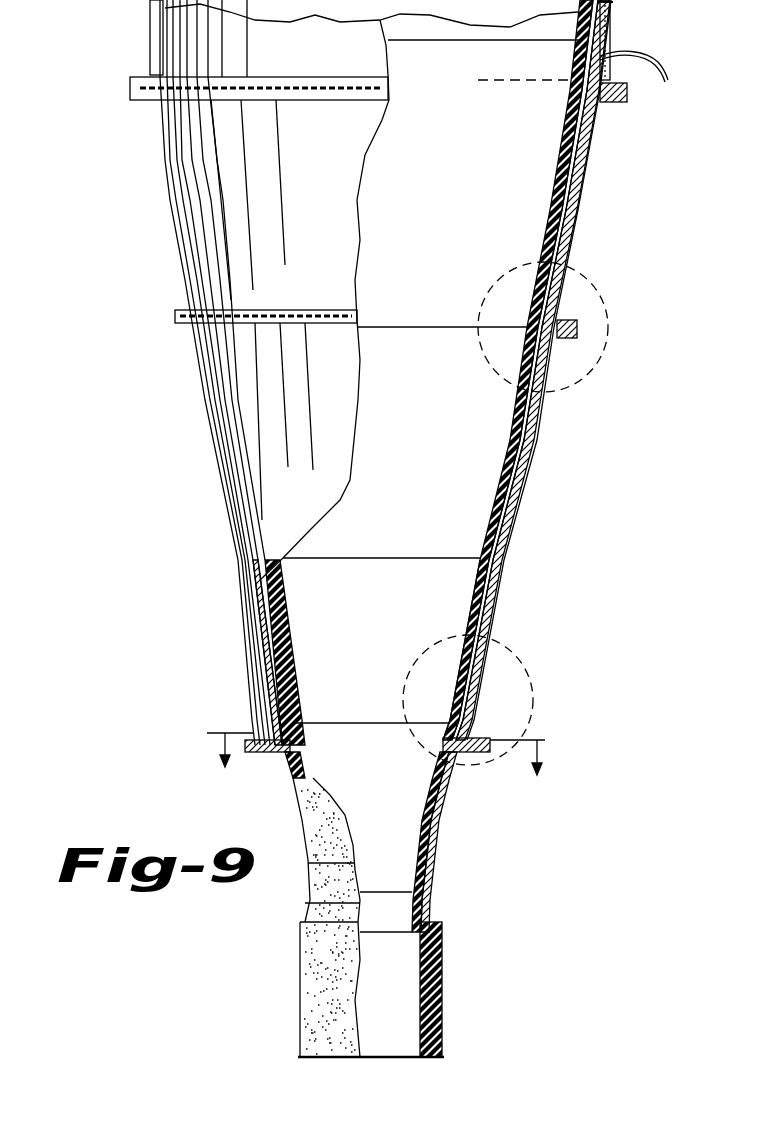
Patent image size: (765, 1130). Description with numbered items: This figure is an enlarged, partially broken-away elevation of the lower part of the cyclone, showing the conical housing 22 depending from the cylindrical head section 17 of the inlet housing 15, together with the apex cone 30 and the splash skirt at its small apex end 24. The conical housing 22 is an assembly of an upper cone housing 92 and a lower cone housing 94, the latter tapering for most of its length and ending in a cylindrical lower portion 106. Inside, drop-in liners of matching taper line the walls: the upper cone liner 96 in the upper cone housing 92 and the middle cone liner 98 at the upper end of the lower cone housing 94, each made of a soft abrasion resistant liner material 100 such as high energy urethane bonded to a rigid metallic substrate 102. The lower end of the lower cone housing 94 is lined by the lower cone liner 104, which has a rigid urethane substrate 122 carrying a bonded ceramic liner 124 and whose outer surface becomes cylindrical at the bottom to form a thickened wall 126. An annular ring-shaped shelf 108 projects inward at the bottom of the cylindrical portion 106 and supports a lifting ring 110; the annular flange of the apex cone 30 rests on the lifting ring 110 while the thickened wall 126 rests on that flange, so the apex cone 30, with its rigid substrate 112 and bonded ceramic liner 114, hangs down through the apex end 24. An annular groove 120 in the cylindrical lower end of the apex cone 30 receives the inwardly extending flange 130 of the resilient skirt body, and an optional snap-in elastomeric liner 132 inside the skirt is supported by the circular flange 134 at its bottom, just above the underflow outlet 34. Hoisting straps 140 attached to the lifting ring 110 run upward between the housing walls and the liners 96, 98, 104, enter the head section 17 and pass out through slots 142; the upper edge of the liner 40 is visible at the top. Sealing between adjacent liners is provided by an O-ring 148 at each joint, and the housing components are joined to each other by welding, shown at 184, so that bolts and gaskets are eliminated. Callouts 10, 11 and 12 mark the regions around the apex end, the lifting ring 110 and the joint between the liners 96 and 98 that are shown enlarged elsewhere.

The detail view circle 10 is at (475, 770).
The section line 11 is at (370, 769).
The detail view circle 12 is at (588, 380).
The inlet housing 15 is at (352, 58).
The cylindrical head section 17 is at (130, 88).
The conical housing 22 is at (128, 205).
The apex end 24 is at (500, 722).
The apex cone 30 is at (294, 812).
The underflow outlet 34 is at (305, 1055).
The liner 40 is at (612, 8).
The upper cone housing 92 is at (210, 250).
The lower cone housing 94 is at (245, 432).
The upper cone liner 96 is at (415, 229).
The middle cone liner 98 is at (415, 407).
The abrasion resistant liner material 100 is at (568, 150).
The rigid metallic substrate 102 is at (572, 205).
The lower cone liner 104 is at (390, 607).
The cylindrical lower portion 106 is at (490, 680).
The annular ring-shaped shelf 108 is at (302, 780).
The lifting ring 110 is at (285, 755).
The rigid substrate 112 is at (445, 842).
The bonded liner 114 is at (432, 820).
The annular groove 120 is at (432, 905).
The rigid substrate 122 is at (483, 595).
The bonded liner 124 is at (490, 618).
The thickened wall 126 is at (302, 712).
The inwardly extending flange 130 is at (442, 925).
The snap-in elastomeric liner 132 is at (420, 1000).
The circular flange 134 is at (415, 1055).
The hoisting straps 140 is at (158, 52).
The slots 142 is at (152, 22).
The O-ring 148 is at (528, 328).
The weld 184 is at (195, 88).